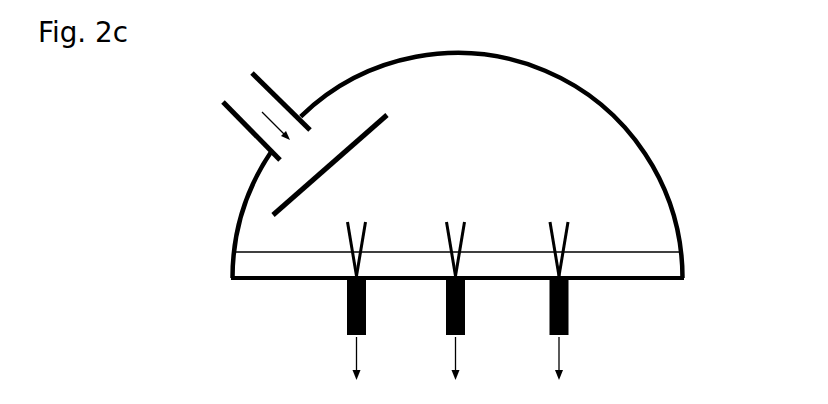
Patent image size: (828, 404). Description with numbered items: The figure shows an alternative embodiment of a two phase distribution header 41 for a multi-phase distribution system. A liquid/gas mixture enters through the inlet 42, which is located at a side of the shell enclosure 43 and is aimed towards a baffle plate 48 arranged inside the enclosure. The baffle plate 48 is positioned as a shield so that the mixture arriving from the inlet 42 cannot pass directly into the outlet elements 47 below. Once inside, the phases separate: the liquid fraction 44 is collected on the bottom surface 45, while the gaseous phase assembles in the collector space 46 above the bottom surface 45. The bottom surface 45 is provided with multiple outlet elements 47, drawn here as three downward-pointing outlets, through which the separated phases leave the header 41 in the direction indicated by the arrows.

The two phase distribution header 41 is at (397, 35).
The inlet 42 is at (233, 116).
The shell enclosure 43 is at (580, 85).
The liquid fraction 44 is at (268, 262).
The bottom surface 45 is at (232, 279).
The collector space 46 is at (472, 188).
The outlet elements 47 is at (347, 315).
The baffle plate 48 is at (375, 118).